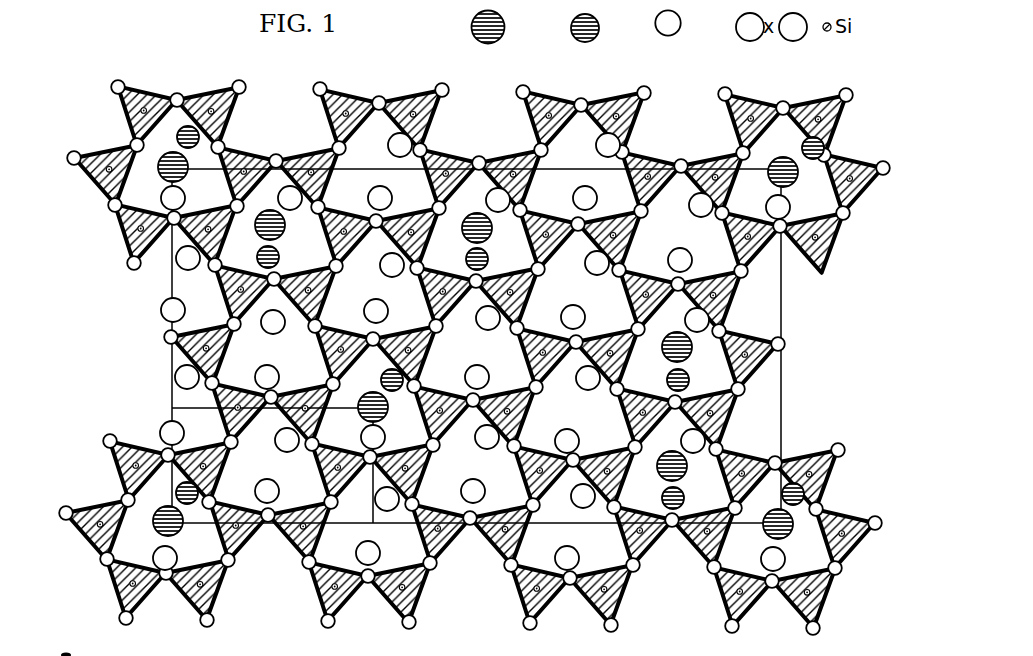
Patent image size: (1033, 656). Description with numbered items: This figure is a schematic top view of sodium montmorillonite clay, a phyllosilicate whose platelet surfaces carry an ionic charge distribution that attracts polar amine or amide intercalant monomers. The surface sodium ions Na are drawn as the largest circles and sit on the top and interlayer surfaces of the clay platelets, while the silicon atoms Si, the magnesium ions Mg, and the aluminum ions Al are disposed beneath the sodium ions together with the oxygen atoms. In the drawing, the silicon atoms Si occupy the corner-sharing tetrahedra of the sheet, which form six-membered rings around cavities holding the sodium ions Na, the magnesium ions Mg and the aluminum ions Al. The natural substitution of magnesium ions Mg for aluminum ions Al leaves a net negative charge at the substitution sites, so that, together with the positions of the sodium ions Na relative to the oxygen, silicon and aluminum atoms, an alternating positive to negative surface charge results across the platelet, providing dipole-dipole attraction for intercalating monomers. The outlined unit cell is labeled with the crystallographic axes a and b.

The a axis of unit cell a is at (179, 346).
The b axis of unit cell b is at (476, 512).
The silicon atom Si is at (749, 123).
The sodium ion Na is at (505, 27).
The magnesium ion Mg is at (600, 28).
The aluminum ion Al is at (676, 23).